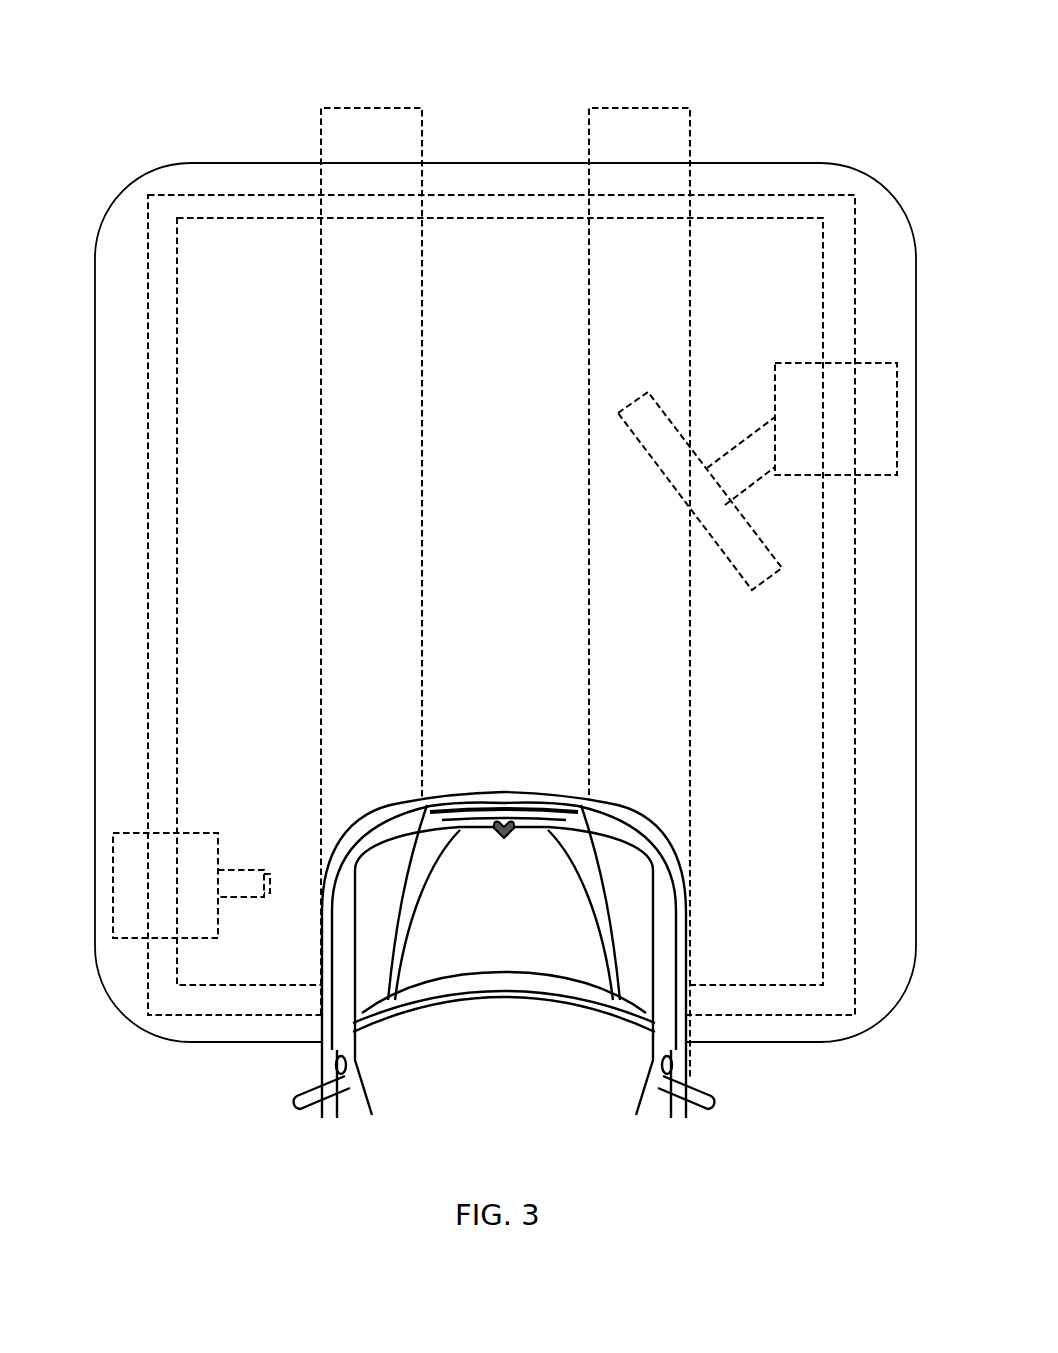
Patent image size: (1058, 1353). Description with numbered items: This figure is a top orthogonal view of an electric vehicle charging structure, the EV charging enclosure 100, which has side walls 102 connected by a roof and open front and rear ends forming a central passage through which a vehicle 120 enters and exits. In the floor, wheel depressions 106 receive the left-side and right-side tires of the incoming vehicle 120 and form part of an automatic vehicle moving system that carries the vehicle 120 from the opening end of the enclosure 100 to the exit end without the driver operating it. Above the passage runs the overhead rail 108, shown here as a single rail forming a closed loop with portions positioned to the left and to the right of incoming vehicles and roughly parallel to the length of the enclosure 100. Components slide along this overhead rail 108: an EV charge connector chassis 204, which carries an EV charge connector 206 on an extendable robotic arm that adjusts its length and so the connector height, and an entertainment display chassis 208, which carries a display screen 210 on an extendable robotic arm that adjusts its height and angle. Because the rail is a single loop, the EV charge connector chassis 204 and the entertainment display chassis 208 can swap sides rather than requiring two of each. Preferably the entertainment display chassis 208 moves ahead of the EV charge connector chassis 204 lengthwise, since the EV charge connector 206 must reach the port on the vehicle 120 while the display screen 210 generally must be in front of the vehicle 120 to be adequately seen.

The EV charging enclosure 100 is at (175, 148).
The side walls 102 is at (875, 180).
The wheel depressions 106 is at (634, 107).
The overhead rail 108 is at (738, 195).
The vehicle 120 is at (292, 1100).
The EV charge connector chassis 204 is at (145, 832).
The EV charge connector 206 is at (270, 890).
The entertainment display chassis 208 is at (897, 378).
The display screen 210 is at (777, 560).